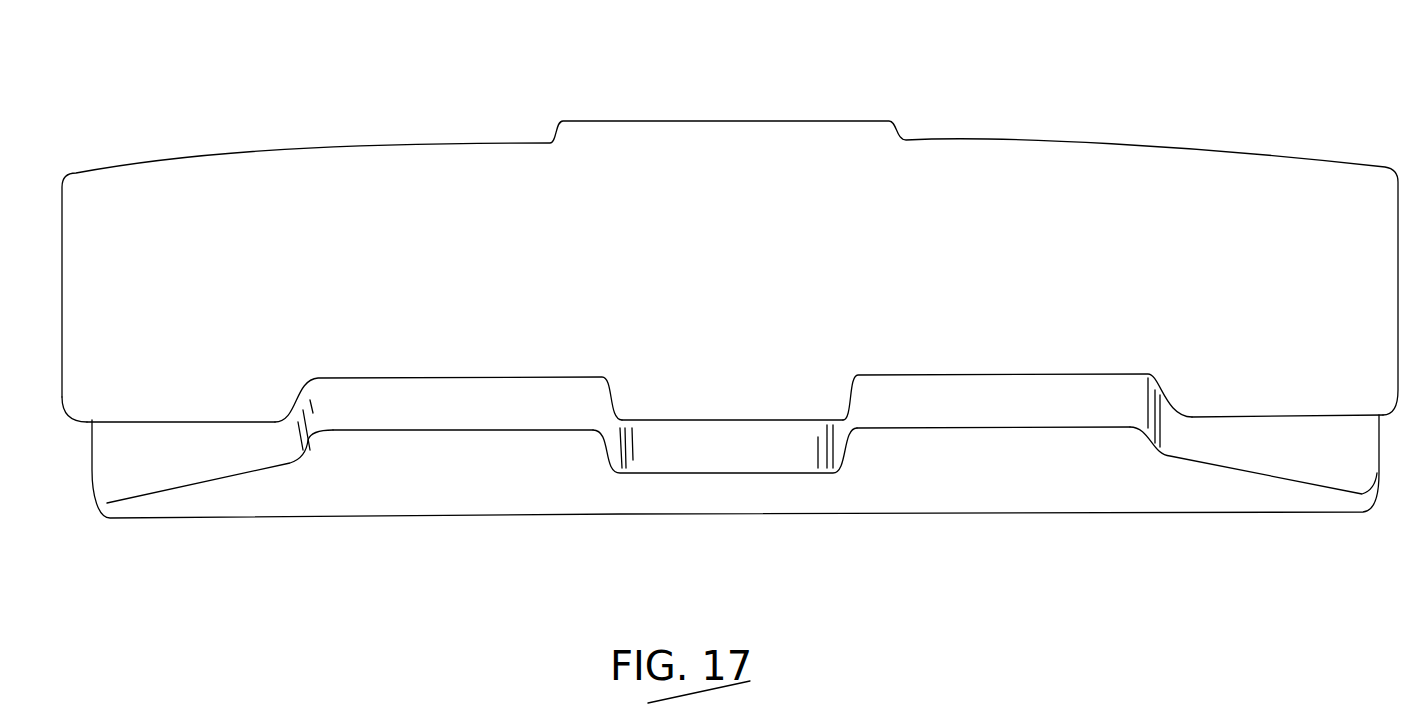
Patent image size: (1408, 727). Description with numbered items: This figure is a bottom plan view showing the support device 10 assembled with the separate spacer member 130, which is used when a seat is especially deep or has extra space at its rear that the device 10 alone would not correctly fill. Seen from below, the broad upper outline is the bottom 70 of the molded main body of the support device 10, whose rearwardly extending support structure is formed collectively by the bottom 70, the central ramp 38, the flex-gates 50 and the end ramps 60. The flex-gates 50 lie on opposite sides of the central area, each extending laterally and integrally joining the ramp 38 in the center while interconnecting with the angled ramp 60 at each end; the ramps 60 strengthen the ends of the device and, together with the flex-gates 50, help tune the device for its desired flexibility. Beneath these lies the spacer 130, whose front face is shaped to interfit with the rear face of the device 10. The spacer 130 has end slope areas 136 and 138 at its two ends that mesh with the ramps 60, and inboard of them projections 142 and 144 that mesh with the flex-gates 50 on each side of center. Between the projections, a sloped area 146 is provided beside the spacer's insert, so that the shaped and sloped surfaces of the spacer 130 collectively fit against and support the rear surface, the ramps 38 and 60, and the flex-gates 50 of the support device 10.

The support device 10 is at (798, 114).
The bottom 70 is at (627, 255).
The flex-gate 50 is at (455, 371).
The ramp 60 is at (247, 404).
The ramp 38 is at (812, 405).
The projection 142 is at (450, 421).
The projection 144 is at (1007, 424).
The sloped area 146 is at (733, 466).
The end slope area 136 is at (207, 469).
The end slope area 138 is at (1330, 465).
The spacer member 130 is at (1257, 512).